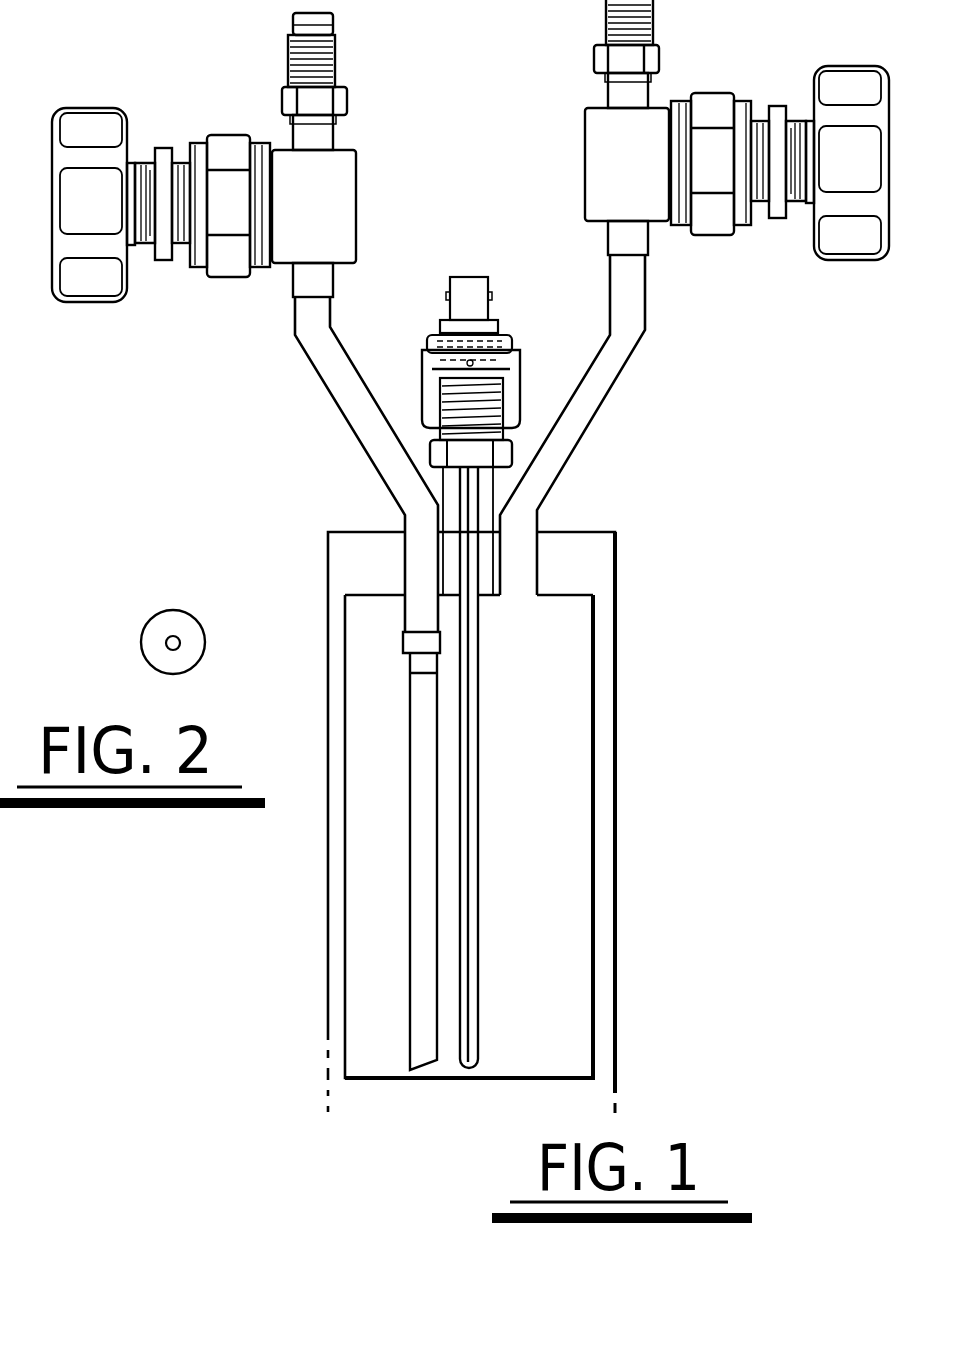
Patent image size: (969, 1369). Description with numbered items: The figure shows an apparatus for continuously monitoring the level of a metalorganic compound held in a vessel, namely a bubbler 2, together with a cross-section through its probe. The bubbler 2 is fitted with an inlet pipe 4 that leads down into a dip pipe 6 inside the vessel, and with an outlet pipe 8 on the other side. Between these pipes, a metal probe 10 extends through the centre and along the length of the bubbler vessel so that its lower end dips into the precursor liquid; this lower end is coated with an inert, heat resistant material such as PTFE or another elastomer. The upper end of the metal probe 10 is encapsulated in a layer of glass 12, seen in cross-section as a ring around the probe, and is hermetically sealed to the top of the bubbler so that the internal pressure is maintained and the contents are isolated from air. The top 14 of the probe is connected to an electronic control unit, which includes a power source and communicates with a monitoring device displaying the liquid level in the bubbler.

In FIG. 1, the bubbler 2 is at (702, 543).
In FIG. 1, the inlet pipe 4 is at (363, 437).
In FIG. 1, the dip pipe 6 is at (423, 810).
In FIG. 1, the outlet pipe 8 is at (598, 408).
In FIG. 1, the metal probe 10 is at (468, 872).
In FIG. 2, the metal probe 10 is at (167, 640).
In FIG. 2, the layer of glass 12 is at (193, 635).
In FIG. 1, the top of the probe 14 is at (472, 275).